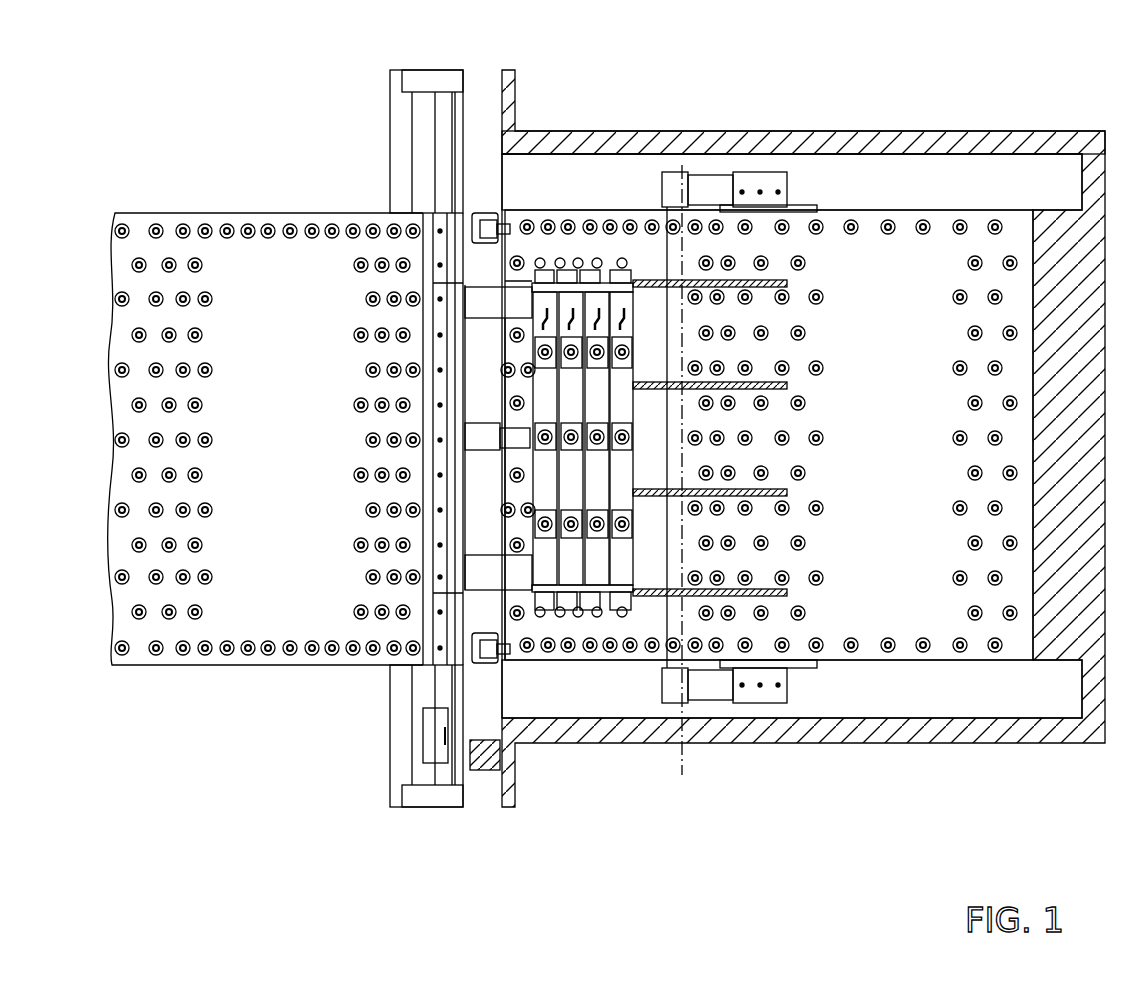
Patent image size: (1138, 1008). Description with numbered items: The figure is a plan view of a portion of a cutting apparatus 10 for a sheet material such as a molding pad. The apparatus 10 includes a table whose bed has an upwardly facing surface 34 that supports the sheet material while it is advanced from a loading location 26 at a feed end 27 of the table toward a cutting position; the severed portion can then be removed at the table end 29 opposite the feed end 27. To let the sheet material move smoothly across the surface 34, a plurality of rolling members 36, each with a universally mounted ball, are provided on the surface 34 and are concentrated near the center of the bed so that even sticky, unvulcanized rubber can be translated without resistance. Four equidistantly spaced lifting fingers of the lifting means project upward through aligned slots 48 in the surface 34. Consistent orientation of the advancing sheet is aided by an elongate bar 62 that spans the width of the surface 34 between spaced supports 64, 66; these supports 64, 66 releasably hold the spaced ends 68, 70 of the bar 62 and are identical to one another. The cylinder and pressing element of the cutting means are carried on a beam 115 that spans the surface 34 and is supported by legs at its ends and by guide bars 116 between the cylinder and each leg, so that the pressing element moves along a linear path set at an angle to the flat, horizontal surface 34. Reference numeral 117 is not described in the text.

The apparatus 10 is at (827, 100).
The loading location 26 is at (1050, 176).
The feed end 27 is at (1046, 110).
The table end 29 is at (261, 457).
The upwardly facing surface 34 is at (566, 457).
The rolling members 36 is at (206, 224).
The aligned slots 48 is at (790, 282).
The third means (elongate bar) 62 is at (660, 258).
The support 64 is at (707, 184).
The support 66 is at (715, 703).
The end of the bar 68 is at (683, 165).
The end of the bar 70 is at (683, 745).
The beam 115 is at (475, 383).
The guide bars 116 is at (433, 77).
The fasteners 117 is at (484, 222).